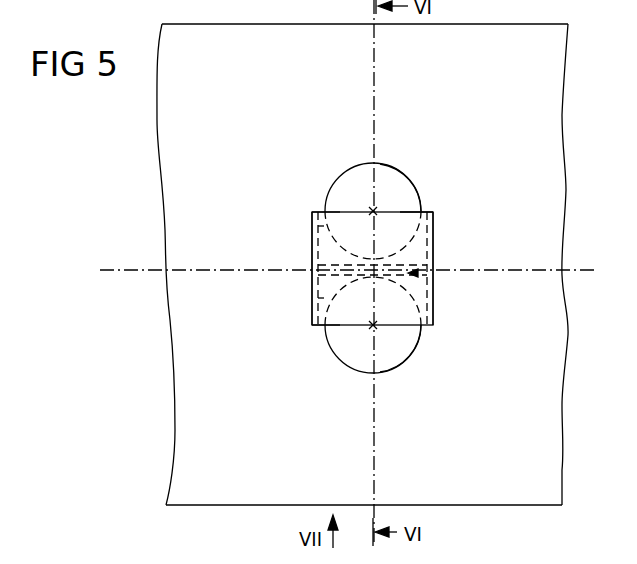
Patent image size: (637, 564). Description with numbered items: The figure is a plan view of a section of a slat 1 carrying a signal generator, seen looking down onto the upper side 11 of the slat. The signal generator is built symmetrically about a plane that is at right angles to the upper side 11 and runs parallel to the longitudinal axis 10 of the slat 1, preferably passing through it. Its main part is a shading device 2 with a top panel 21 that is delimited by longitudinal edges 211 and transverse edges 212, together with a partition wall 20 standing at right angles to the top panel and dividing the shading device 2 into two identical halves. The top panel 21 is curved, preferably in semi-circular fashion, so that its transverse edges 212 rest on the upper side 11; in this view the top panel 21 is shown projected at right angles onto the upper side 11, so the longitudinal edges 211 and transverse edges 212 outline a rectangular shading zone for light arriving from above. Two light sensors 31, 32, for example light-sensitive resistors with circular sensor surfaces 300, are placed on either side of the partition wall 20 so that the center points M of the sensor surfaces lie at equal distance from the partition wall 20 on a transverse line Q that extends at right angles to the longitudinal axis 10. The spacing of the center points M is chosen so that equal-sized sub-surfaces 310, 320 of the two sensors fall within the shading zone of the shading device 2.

The slat 1 is at (160, 175).
The longitudinal axis 10 is at (125, 270).
The upper side 11 is at (520, 118).
The shading device 2 is at (438, 218).
The partition wall 20 is at (430, 283).
The top panel 21 is at (431, 212).
The longitudinal edges 211 is at (354, 212).
The transverse edges 212 is at (312, 276).
The circular sensor surfaces 300 is at (352, 178).
The light sensor 31 is at (397, 182).
The light sensor 32 is at (405, 345).
The sub-surface 310 is at (318, 226).
The sub-surface 320 is at (318, 298).
The center points M is at (372, 208).
The transverse line Q is at (372, 70).